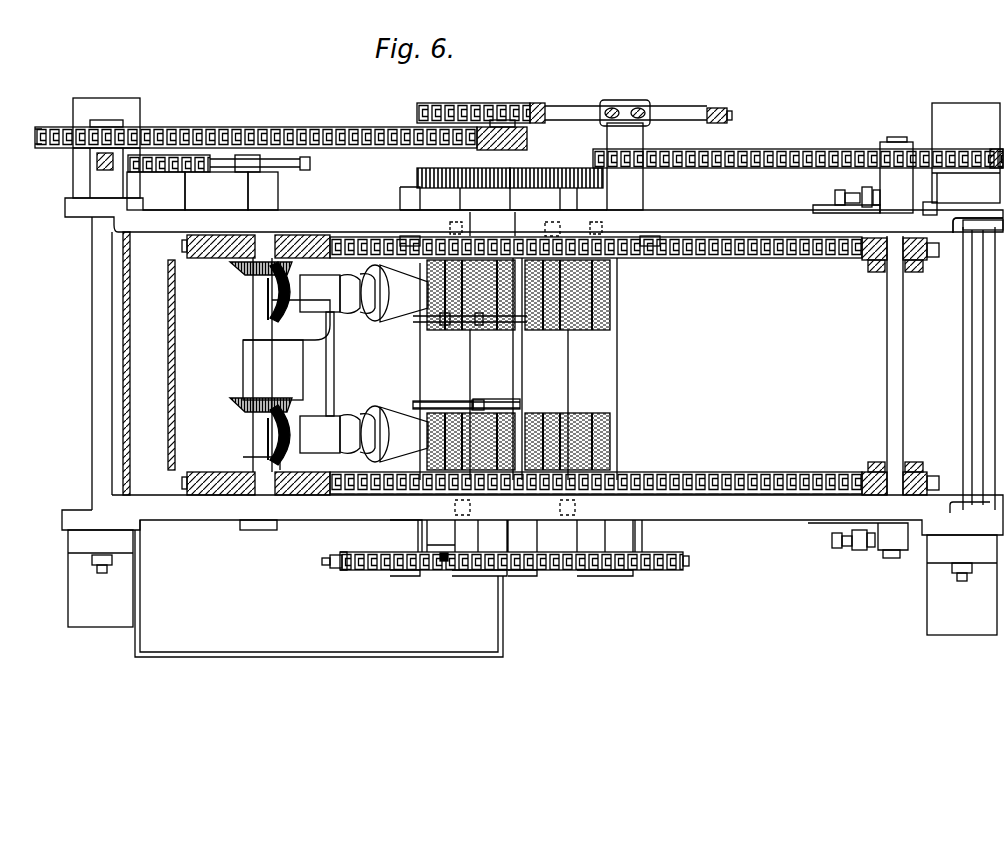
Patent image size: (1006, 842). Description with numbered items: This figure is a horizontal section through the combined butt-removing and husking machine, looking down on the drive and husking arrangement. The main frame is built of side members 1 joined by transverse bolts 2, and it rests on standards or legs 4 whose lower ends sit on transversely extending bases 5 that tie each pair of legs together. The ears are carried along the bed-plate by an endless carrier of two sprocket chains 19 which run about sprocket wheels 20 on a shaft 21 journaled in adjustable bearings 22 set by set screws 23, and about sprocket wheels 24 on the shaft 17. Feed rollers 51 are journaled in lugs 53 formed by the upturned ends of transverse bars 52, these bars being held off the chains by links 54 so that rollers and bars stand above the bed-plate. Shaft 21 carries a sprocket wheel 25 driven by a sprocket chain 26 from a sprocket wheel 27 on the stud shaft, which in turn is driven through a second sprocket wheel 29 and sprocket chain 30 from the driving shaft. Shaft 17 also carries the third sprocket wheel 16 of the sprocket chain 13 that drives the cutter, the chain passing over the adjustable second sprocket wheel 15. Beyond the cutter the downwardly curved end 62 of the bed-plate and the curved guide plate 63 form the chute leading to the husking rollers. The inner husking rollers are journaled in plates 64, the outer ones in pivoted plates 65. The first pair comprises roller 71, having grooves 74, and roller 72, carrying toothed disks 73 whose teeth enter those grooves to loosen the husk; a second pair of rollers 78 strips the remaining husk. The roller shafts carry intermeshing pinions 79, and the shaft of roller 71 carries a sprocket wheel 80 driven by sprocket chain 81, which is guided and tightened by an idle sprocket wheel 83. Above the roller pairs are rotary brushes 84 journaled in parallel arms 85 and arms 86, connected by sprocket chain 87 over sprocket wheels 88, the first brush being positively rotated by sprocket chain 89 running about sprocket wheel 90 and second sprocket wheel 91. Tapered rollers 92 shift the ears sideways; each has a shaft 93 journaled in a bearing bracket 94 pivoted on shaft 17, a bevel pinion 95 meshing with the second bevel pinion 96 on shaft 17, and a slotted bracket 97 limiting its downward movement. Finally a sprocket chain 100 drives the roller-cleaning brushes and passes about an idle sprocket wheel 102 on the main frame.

The side member 1 is at (762, 218).
The transverse bolt 2 is at (104, 575).
The standard 4 is at (85, 182).
The supporting base 5 is at (130, 112).
The sprocket chain 13 is at (195, 172).
The second sprocket wheel 15 is at (135, 172).
The third sprocket wheel 16 is at (310, 165).
The shaft 17 is at (255, 325).
The sprocket chain 19 is at (760, 260).
The sprocket wheel 20 is at (922, 272).
The shaft 21 is at (887, 408).
The adjustable bearing 22 is at (880, 186).
The set screw 23 is at (835, 191).
The sprocket wheel 24 is at (220, 258).
The sprocket wheel 25 is at (995, 148).
The sprocket chain 26 is at (808, 150).
The sprocket wheel 27 is at (605, 180).
The second sprocket wheel 29 is at (688, 95).
The sprocket chain 30 is at (483, 103).
The roller 51 is at (975, 333).
The transverse bar 52 is at (965, 365).
The lug 53 is at (938, 512).
The link 54 is at (944, 258).
The curved end of bed-plate 62 is at (175, 345).
The curved guide plate 63 is at (148, 360).
The plate 64 is at (521, 224).
The pivoted plate 65 is at (517, 225).
The husking roller 71 is at (470, 372).
The husking roller 72 is at (420, 355).
The toothed disk 73 is at (438, 401).
The groove 74 is at (490, 399).
The second pair of rollers 78 is at (568, 357).
The pinion 79 is at (470, 168).
The sprocket wheel 80 is at (528, 140).
The sprocket chain 81 is at (365, 128).
The idle sprocket wheel 83 is at (106, 161).
The rotary brush 84 is at (455, 332).
The parallel arm 85 is at (548, 494).
The arm 86 is at (595, 262).
The sprocket chain 87 is at (481, 224).
The sprocket wheel 88 is at (529, 231).
The sprocket chain 89 is at (548, 570).
The sprocket wheel 90 is at (444, 562).
The second sprocket wheel 91 is at (690, 562).
The tapered roller 92 is at (408, 318).
The shaft 93 is at (337, 364).
The bearing bracket 94 is at (334, 390).
The bevel pinion 95 is at (268, 300).
The second bevel pinion 96 is at (238, 276).
The bracket 97 is at (394, 363).
The sprocket chain 100 is at (345, 570).
The idle sprocket wheel 102 is at (330, 560).